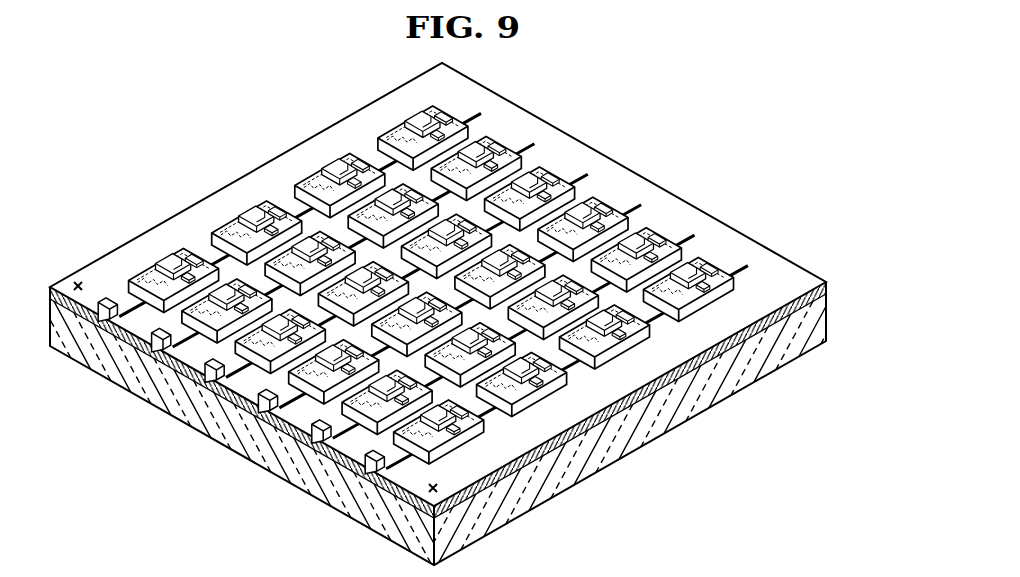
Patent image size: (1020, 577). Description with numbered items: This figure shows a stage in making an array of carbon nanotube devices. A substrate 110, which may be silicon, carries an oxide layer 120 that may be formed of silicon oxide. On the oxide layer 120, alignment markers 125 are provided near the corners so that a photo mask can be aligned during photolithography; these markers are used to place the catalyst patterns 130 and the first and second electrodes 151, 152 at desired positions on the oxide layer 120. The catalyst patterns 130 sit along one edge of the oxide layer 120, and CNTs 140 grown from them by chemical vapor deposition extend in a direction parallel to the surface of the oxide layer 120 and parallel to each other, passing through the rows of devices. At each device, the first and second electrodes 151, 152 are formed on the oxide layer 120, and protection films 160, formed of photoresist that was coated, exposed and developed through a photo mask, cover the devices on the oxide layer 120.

The substrate 110 is at (823, 327).
The oxide layer 120 is at (827, 290).
The alignment markers 125 is at (77, 274).
The catalyst patterns 130 is at (313, 442).
The CNTs 140 is at (691, 233).
The first electrode 151 is at (598, 352).
The second electrode 152 is at (640, 345).
The protection films 160 is at (612, 335).